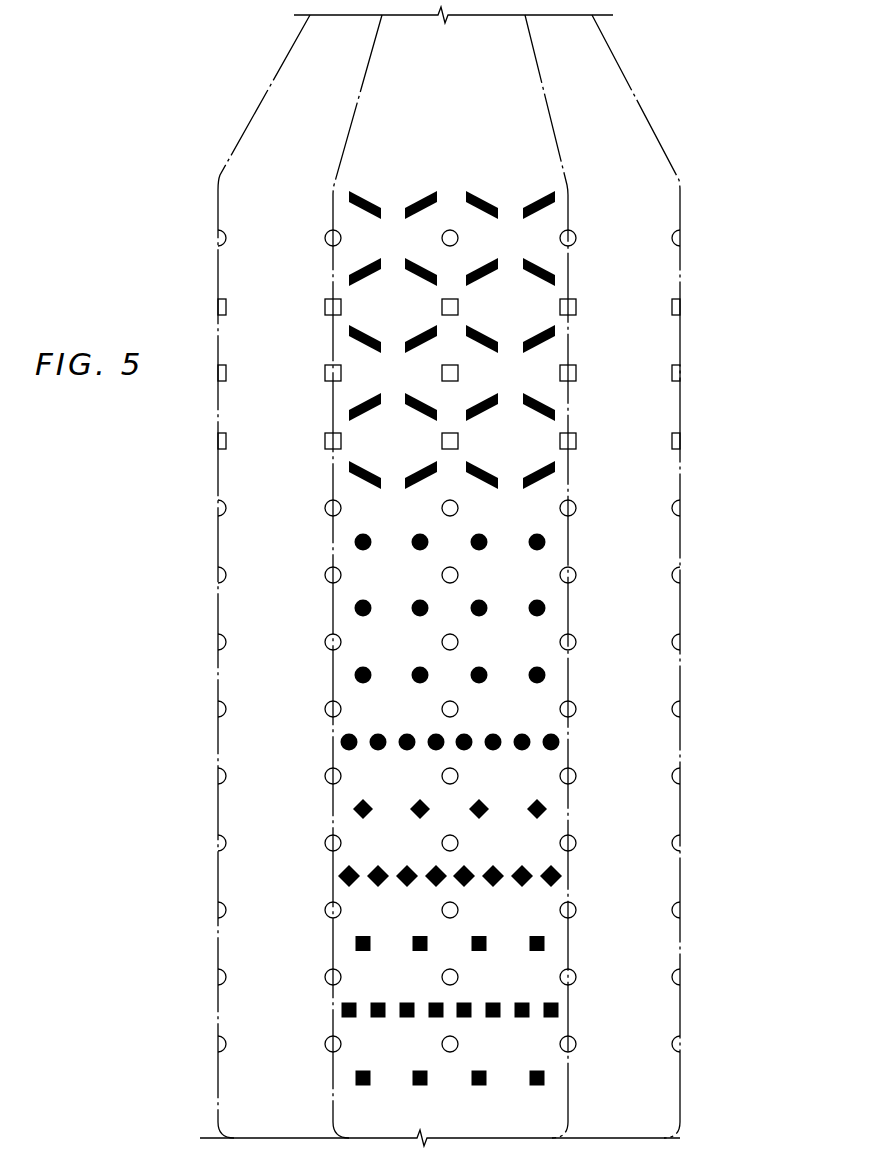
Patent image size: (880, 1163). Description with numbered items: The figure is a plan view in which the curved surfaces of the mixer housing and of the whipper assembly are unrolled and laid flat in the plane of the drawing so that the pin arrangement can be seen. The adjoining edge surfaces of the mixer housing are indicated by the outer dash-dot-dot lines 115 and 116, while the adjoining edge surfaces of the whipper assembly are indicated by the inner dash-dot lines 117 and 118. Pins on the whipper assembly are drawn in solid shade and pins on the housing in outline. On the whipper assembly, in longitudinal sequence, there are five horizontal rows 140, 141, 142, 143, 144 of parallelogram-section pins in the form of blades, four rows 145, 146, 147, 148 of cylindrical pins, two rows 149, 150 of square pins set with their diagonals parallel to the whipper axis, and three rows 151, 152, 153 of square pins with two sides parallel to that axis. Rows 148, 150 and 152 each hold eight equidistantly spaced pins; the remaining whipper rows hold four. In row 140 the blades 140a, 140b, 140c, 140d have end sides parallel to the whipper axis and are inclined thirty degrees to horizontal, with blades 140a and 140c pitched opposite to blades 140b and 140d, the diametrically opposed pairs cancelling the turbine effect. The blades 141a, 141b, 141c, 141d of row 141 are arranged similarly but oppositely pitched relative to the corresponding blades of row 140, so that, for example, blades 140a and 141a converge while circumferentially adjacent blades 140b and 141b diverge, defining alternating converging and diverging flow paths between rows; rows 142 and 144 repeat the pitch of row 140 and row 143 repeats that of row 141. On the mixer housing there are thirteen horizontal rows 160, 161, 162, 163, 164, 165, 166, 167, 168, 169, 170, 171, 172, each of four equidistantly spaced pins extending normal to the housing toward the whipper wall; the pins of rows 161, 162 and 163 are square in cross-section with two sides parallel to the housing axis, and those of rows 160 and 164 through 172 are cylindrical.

The dash-dot-dot line 115 is at (250, 122).
The dash-dot-dot line 116 is at (642, 107).
The dash-dot line 117 is at (353, 118).
The dash-dot line 118 is at (545, 95).
The horizontal row of parallelogram-section pins 140 is at (556, 169).
The blade 140a is at (363, 192).
The blade 140b is at (430, 199).
The blade 140c is at (481, 192).
The blade 140d is at (544, 199).
The horizontal row of parallelogram-section pins 141 is at (512, 277).
The blade 141a is at (362, 271).
The blade 141b is at (421, 280).
The blade 141c is at (487, 278).
The blade 141d is at (548, 270).
The horizontal row of parallelogram-section pins 142 is at (573, 340).
The horizontal row of parallelogram-section pins 143 is at (573, 407).
The horizontal row of parallelogram-section pins 144 is at (573, 474).
The horizontal row of cylindrical pins 145 is at (573, 541).
The horizontal row of cylindrical pins 146 is at (573, 608).
The horizontal row of cylindrical pins 147 is at (573, 675).
The horizontal row of cylindrical pins 148 is at (573, 742).
The horizontal row of diagonal square pins 149 is at (573, 809).
The horizontal row of diagonal square pins 150 is at (573, 876).
The horizontal row of square pins 151 is at (573, 943).
The horizontal row of square pins 152 is at (573, 1010).
The horizontal row of square pins 153 is at (573, 1078).
The horizontal row of housing pins 160 is at (686, 238).
The horizontal row of housing pins 161 is at (686, 307).
The horizontal row of housing pins 162 is at (686, 373).
The horizontal row of housing pins 163 is at (686, 441).
The horizontal row of housing pins 164 is at (686, 508).
The horizontal row of housing pins 165 is at (686, 575).
The horizontal row of housing pins 166 is at (686, 642).
The horizontal row of housing pins 167 is at (686, 709).
The horizontal row of housing pins 168 is at (686, 776).
The horizontal row of housing pins 169 is at (686, 843).
The horizontal row of housing pins 170 is at (686, 910).
The horizontal row of housing pins 171 is at (686, 977).
The horizontal row of housing pins 172 is at (686, 1044).